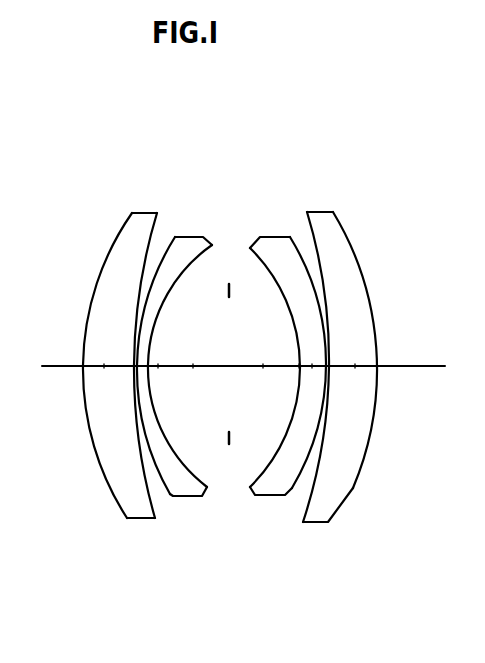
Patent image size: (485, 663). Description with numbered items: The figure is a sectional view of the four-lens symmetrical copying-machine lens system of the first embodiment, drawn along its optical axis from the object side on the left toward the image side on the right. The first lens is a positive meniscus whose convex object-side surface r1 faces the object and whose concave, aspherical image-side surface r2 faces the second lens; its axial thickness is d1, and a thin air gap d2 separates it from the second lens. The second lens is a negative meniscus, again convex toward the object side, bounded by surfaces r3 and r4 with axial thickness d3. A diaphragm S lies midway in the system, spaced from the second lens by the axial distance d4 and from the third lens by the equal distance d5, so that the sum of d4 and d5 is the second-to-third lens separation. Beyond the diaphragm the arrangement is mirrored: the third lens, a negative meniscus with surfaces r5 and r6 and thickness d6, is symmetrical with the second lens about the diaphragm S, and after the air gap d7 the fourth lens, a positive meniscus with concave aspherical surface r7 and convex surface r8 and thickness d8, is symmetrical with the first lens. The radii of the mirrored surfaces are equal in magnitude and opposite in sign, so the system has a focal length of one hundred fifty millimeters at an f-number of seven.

The radius of curvature of the object-side surface of the first lens r1 is at (97, 473).
The radius of curvature of the image-side surface of the first lens r2 is at (147, 496).
The radius of curvature of the object-side surface of the second lens r3 is at (163, 494).
The radius of curvature of the image-side surface of the second lens r4 is at (207, 488).
The radius of curvature of the object-side surface of the third lens r5 is at (262, 465).
The radius of curvature of the image-side surface of the third lens r6 is at (292, 490).
The radius of curvature of the object-side surface of the fourth lens r7 is at (312, 486).
The radius of curvature of the image-side surface of the fourth lens r8 is at (353, 489).
The diaphragm S is at (228, 284).
The axial thickness of the first lens d1 is at (82, 378).
The axial air gap between the first and second lenses d2 is at (105, 371).
The axial thickness of the second lens d3 is at (158, 376).
The axial distance from the second lens to the diaphragm d4 is at (193, 371).
The axial distance from the diaphragm to the third lens d5 is at (264, 371).
The axial thickness of the third lens d6 is at (299, 378).
The axial air gap between the third and fourth lenses d7 is at (312, 372).
The axial thickness of the fourth lens d8 is at (355, 366).